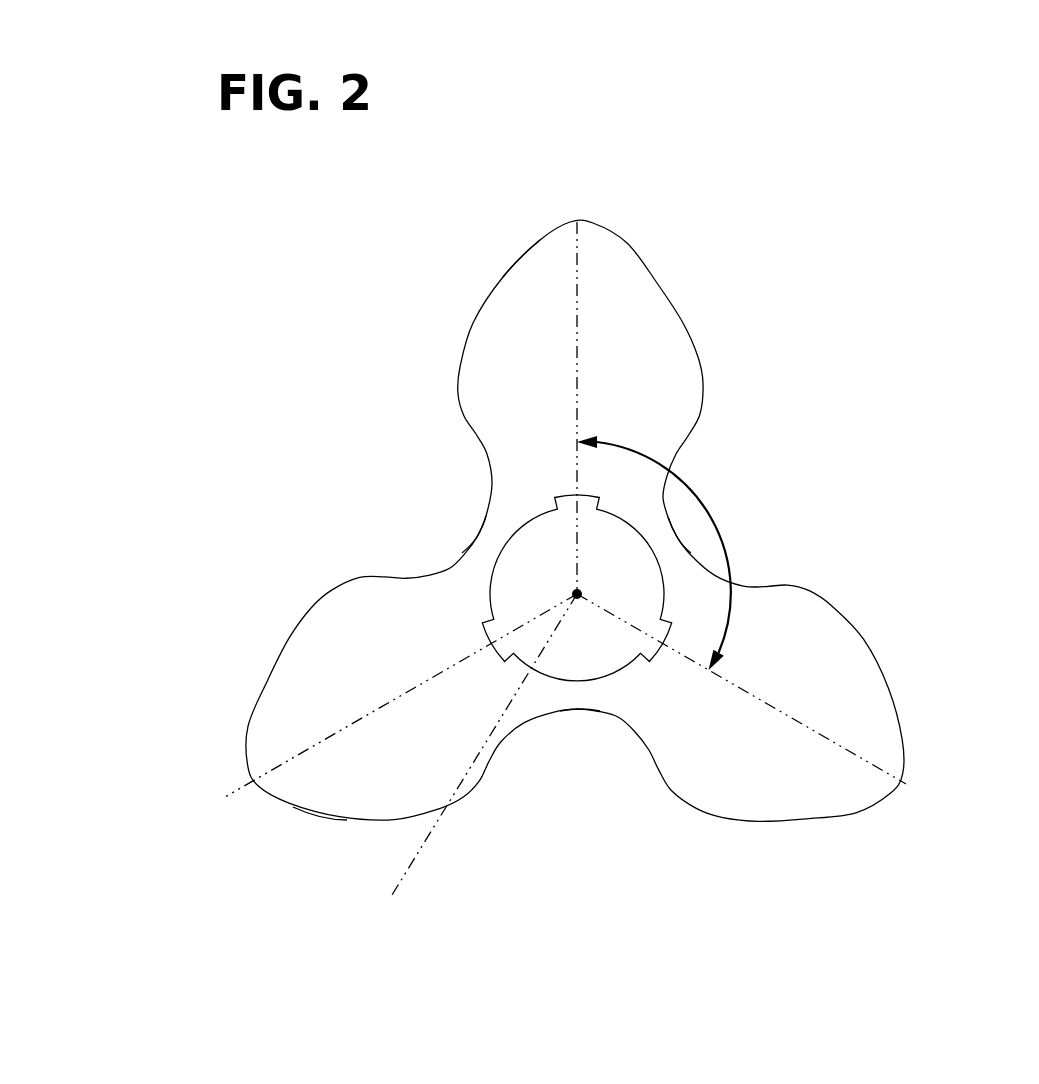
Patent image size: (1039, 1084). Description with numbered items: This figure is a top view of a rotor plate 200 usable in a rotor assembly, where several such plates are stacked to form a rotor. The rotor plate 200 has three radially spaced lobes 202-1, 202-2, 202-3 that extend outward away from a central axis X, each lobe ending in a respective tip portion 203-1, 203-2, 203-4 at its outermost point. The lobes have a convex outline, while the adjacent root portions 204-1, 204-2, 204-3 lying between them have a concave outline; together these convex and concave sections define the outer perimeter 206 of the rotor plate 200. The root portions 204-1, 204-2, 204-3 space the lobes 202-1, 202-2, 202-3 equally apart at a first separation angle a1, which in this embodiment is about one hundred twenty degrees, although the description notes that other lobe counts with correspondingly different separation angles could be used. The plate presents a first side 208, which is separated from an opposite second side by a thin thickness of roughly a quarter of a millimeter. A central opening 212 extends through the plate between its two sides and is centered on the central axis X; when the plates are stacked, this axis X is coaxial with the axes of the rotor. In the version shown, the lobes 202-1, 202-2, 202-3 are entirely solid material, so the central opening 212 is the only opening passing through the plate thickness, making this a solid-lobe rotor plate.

The rotor plate 200 is at (575, 519).
The lobe 202-1 is at (459, 373).
The lobe 202-2 is at (716, 810).
The lobe 202-3 is at (340, 592).
The tip portion 203-1 is at (573, 222).
The tip portion 203-2 is at (893, 792).
The third lobe tip 203-4 is at (256, 780).
The root portion 204-1 is at (687, 555).
The root portion 204-2 is at (553, 712).
The root portion 204-3 is at (472, 547).
The outer perimeter 206 is at (504, 274).
The first side 208 is at (320, 805).
The central opening 212 is at (610, 658).
The first separation angle a1 is at (654, 553).
The central axis X is at (478, 757).